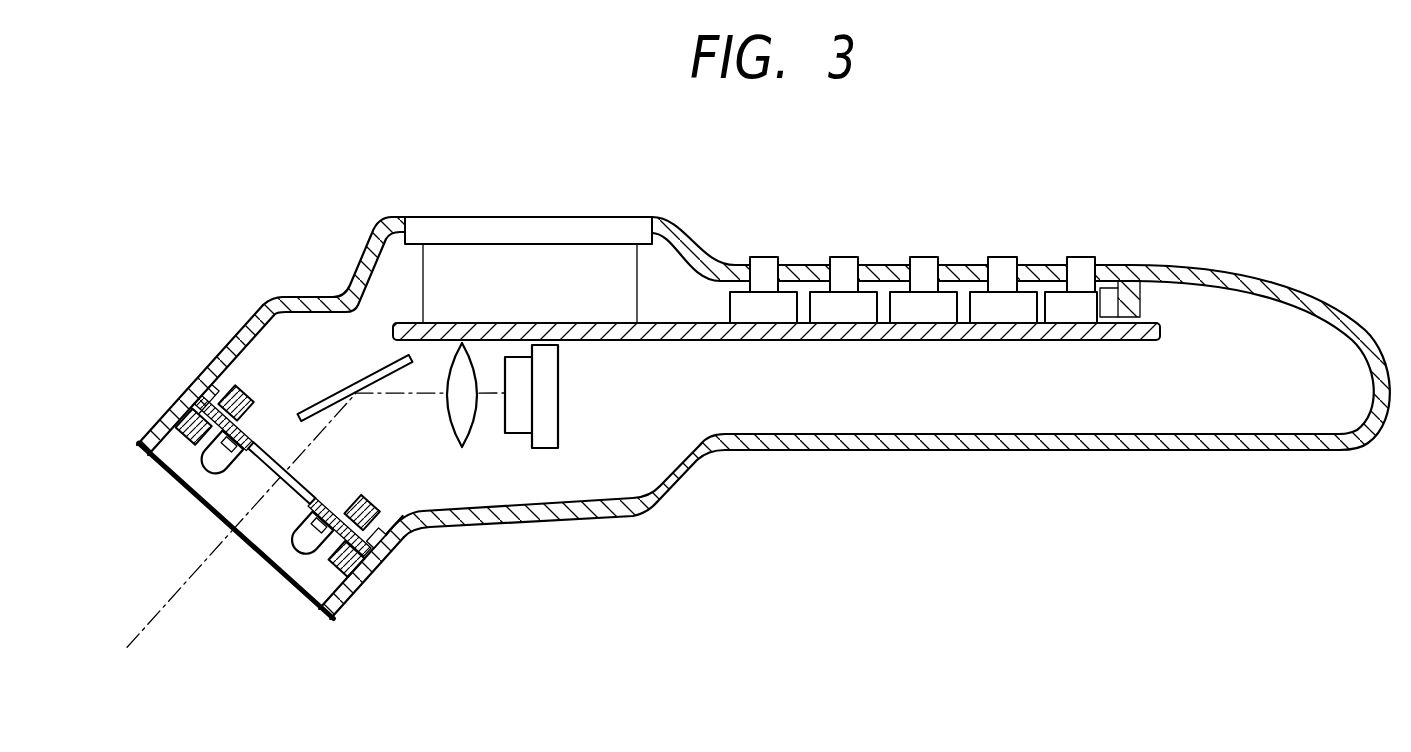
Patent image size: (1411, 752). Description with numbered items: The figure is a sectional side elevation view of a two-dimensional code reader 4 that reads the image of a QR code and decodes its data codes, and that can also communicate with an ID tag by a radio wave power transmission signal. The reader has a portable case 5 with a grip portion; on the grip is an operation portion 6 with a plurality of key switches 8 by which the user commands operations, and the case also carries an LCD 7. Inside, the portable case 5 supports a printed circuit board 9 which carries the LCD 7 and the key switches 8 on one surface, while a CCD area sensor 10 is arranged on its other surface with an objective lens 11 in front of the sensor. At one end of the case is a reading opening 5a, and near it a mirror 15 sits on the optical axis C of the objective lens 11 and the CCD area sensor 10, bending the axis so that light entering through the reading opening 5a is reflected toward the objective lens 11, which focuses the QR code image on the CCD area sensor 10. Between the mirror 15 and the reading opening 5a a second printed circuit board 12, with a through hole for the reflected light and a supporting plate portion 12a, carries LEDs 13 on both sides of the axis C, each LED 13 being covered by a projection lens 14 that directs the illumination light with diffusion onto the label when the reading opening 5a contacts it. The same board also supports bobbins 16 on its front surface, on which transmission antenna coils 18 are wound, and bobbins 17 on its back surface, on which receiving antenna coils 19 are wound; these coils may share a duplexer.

The two-dimensional code reader 4 is at (763, 402).
The portable case 5 is at (1197, 263).
The reading opening 5a is at (316, 598).
The operation portion 6 is at (970, 265).
The LCD 7 is at (624, 216).
The key switches 8 is at (845, 257).
The printed circuit board 9 is at (1040, 341).
The CCD area sensor 10 is at (515, 438).
The objective lens 11 is at (457, 440).
The printed circuit board 12 is at (330, 508).
The support plate 12a is at (310, 490).
The LEDs 13 is at (236, 466).
The projection lens 14 is at (294, 553).
The mirror 15 is at (365, 380).
The bobbins 16 is at (357, 604).
The bobbins 17 is at (243, 402).
The transmission antenna coils 18 is at (376, 578).
The receiving antenna coils 19 is at (230, 383).
The optical axis C is at (426, 395).